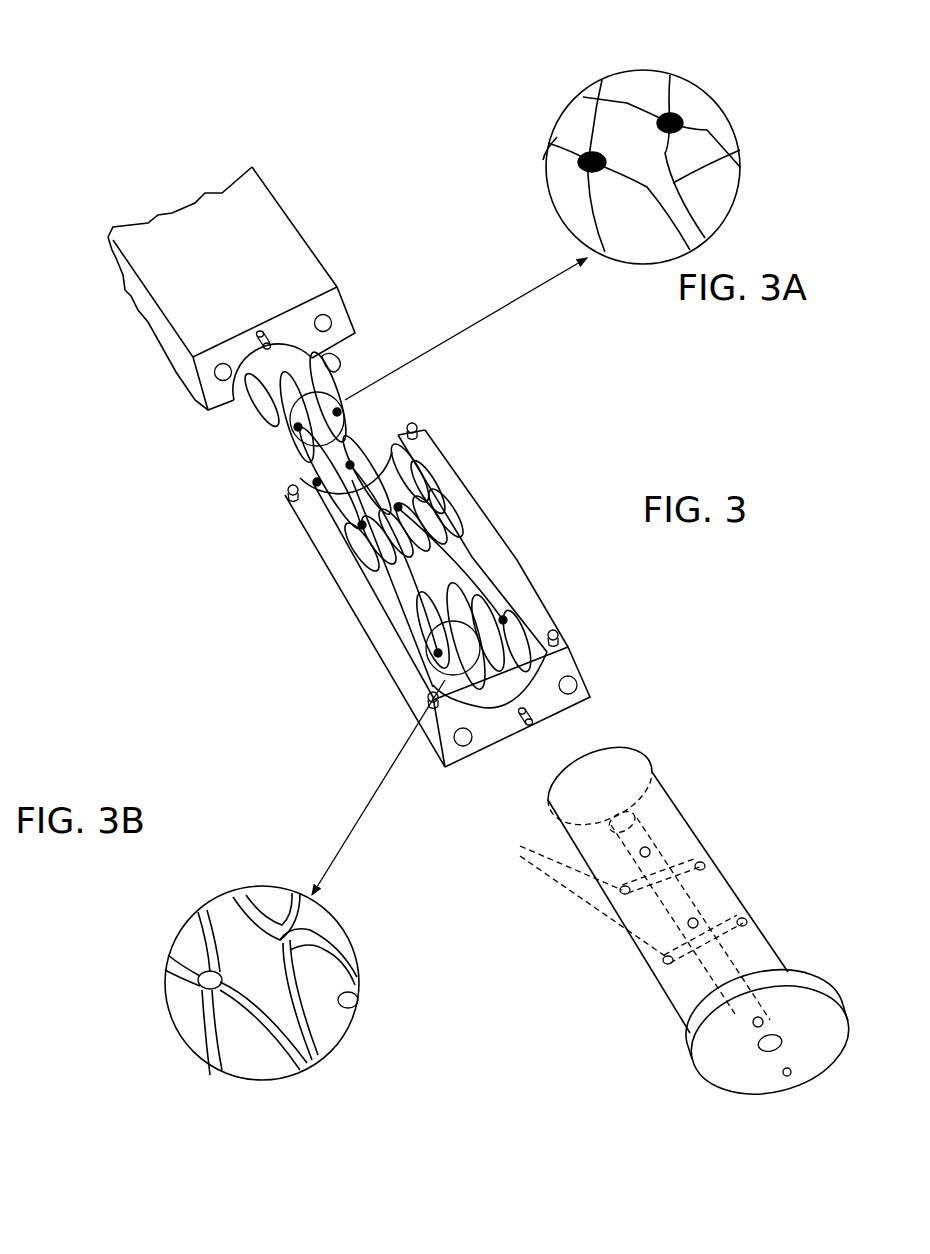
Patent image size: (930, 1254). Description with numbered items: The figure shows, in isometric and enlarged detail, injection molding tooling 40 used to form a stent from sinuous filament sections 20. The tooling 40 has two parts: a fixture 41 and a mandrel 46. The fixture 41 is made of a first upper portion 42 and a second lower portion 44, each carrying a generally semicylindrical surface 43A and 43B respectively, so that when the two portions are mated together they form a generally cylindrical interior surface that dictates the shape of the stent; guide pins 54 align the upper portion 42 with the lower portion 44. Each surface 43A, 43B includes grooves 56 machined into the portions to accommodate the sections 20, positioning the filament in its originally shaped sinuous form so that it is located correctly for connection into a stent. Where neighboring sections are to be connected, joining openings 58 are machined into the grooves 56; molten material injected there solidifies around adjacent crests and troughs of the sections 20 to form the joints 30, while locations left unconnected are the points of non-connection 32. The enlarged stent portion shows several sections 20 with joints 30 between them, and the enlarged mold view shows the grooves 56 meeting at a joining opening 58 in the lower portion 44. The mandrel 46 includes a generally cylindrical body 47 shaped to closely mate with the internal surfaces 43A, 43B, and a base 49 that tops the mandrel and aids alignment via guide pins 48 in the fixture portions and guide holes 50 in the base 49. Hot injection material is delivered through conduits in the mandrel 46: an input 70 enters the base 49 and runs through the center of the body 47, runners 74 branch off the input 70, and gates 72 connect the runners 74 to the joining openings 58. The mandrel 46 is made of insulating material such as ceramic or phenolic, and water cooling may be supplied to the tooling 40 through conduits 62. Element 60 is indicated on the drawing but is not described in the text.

In FIG. 3, the sections 20 is at (293, 463).
In FIG. 3A, the sections 20 is at (620, 100).
In FIG. 3, the joints 30 is at (341, 412).
In FIG. 3A, the joints 30 is at (652, 105).
In FIG. 3, the points of non-connection 32 is at (294, 427).
In FIG. 3, the tooling 40 is at (613, 425).
In FIG. 3, the fixture 41 is at (130, 370).
In FIG. 3, the first upper portion 42 is at (262, 200).
In FIG. 3, the semicylindrical surface 43A is at (332, 357).
In FIG. 3, the semicylindrical surface 43B is at (395, 586).
In FIG. 3, the second lower portion 44 is at (447, 477).
In FIG. 3B, the second lower portion 44 is at (313, 917).
In FIG. 3, the mandrel 46 is at (677, 823).
In FIG. 3, the body 47 is at (650, 805).
In FIG. 3, the guide pins 48 is at (254, 341).
In FIG. 3, the base 49 is at (817, 1047).
In FIG. 3, the guide holes 50 is at (757, 1026).
In FIG. 3, the guide pins 54 is at (418, 427).
In FIG. 3, the grooves 56 is at (372, 510).
In FIG. 3B, the grooves 56 is at (248, 900).
In FIG. 3, the joining openings 58 is at (393, 509).
In FIG. 3B, the joining openings 58 is at (198, 980).
In FIG. 3, the channel 60 is at (428, 630).
In FIG. 3, the conduits 62 is at (325, 320).
In FIG. 3, the input 70 is at (779, 1038).
In FIG. 3, the gates 72 is at (704, 867).
In FIG. 3, the runners 74 is at (577, 893).